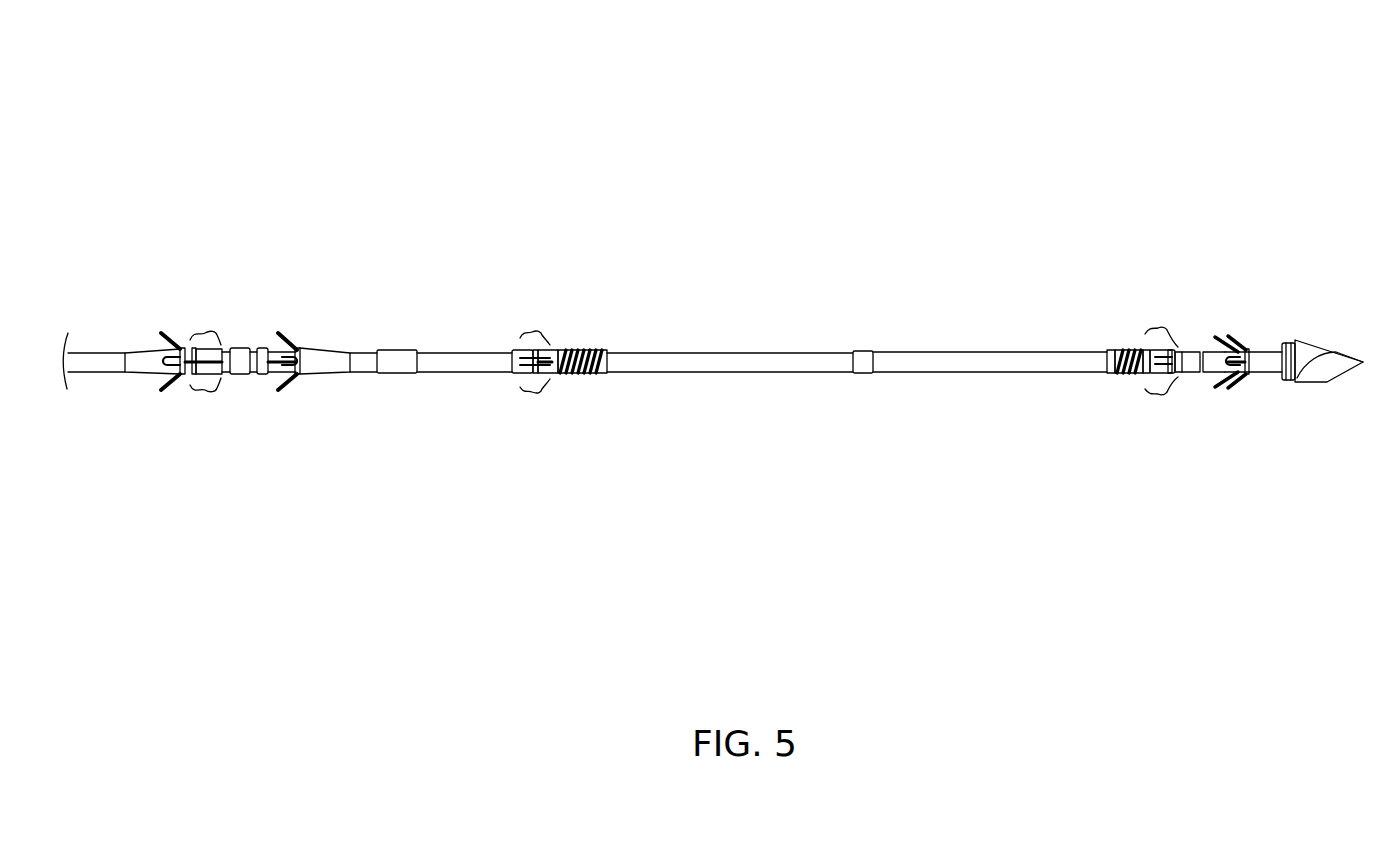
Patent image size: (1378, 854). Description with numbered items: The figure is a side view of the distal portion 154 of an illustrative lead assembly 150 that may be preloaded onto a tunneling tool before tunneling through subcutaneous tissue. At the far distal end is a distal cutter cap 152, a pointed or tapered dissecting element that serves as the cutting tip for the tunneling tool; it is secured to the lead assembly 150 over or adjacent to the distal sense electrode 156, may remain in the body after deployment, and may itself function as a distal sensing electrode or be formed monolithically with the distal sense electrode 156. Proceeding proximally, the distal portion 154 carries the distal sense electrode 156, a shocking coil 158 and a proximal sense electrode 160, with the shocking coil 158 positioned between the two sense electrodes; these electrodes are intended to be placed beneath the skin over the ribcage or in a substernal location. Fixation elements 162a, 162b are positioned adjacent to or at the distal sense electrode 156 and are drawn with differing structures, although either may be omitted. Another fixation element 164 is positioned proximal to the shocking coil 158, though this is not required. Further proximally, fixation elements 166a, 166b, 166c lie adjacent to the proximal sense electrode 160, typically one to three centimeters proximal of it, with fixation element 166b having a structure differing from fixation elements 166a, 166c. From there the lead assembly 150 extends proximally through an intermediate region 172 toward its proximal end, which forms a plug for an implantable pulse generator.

The lead assembly 150 is at (982, 98).
The distal cutter cap 152 is at (1310, 348).
The distal portion 154 is at (863, 273).
The distal sense electrode 156 is at (1270, 374).
The shocking coil 158 is at (742, 387).
The proximal sense electrode 160 is at (398, 374).
The fixation element 162a is at (1228, 335).
The fixation element 162b is at (1178, 378).
The fixation element 164 is at (541, 333).
The fixation element 166a is at (278, 332).
The fixation element 166b is at (212, 390).
The fixation element 166c is at (162, 332).
The intermediate region 172 is at (96, 386).